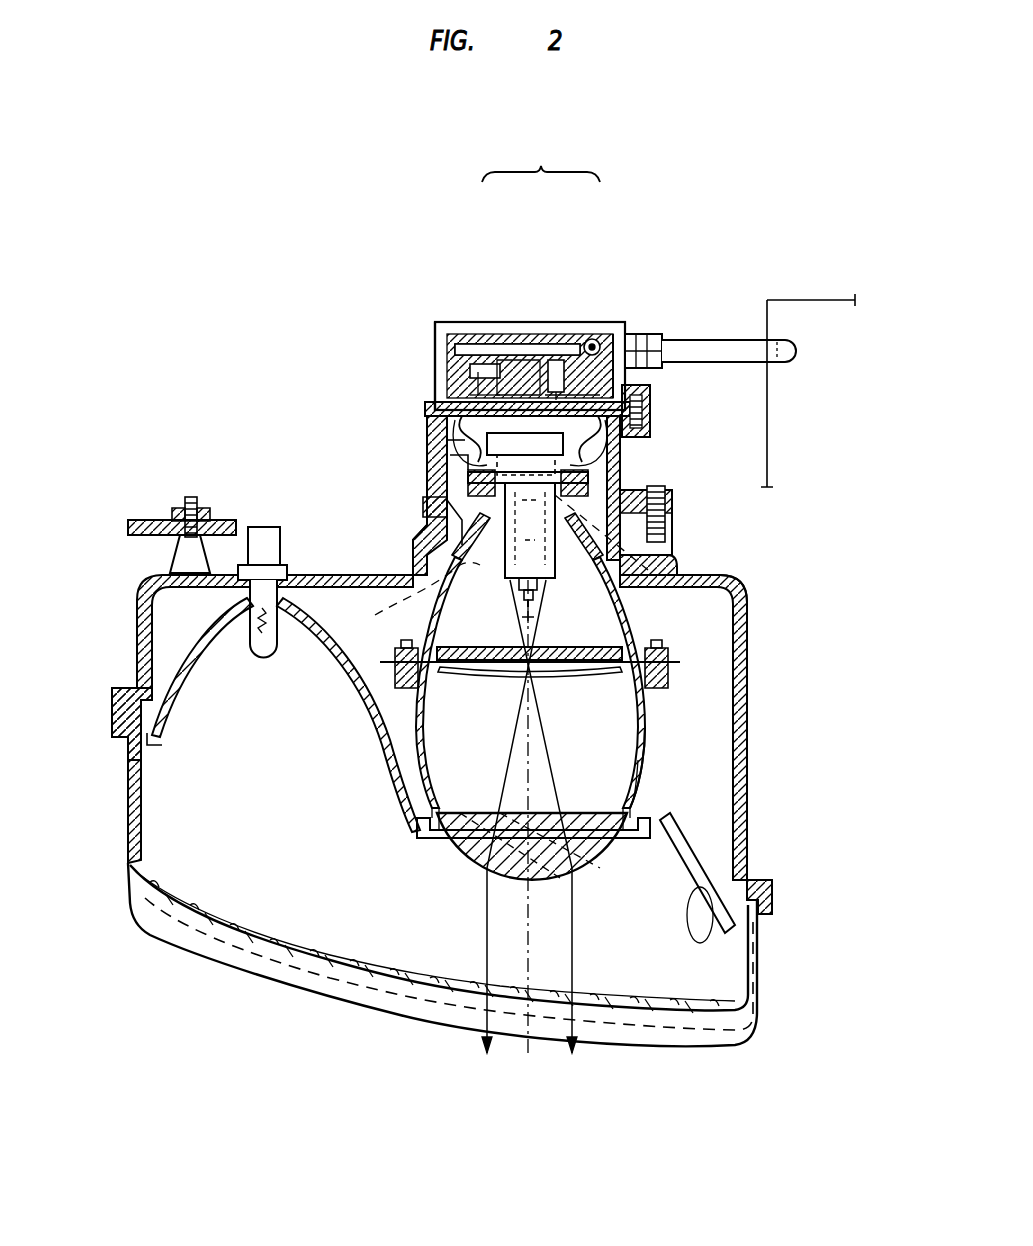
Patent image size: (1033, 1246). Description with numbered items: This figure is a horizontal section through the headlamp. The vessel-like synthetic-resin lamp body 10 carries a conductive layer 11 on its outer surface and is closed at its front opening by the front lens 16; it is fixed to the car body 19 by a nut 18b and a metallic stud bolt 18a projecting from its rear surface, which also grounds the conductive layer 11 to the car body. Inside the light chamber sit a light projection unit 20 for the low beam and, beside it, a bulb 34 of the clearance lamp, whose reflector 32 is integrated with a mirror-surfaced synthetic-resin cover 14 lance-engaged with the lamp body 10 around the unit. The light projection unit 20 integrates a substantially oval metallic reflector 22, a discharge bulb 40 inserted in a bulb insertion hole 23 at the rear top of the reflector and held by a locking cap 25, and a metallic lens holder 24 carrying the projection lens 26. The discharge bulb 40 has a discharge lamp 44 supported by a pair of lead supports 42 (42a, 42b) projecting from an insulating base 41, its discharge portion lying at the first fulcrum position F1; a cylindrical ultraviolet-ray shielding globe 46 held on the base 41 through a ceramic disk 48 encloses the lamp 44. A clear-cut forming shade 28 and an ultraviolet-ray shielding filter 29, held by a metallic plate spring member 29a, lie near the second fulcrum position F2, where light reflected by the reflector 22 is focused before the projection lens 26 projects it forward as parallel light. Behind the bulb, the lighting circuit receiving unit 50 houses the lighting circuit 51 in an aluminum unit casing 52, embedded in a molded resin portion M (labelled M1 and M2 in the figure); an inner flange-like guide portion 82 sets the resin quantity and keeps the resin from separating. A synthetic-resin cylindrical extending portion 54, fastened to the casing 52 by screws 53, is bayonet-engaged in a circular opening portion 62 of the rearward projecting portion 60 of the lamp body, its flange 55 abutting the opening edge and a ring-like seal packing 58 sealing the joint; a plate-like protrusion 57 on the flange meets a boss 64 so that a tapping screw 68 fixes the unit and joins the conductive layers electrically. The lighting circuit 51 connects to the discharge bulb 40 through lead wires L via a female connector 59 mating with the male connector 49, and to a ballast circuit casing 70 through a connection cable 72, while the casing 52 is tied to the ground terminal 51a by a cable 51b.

The lamp body 10 is at (747, 657).
The conductive layer 11 is at (747, 722).
The cover 14 is at (720, 942).
The front lens 16 is at (286, 996).
The stud bolt 18a is at (190, 497).
The nut 18b is at (178, 510).
The car body 19 is at (135, 532).
The light projection unit 20 is at (652, 750).
The reflector 22 is at (740, 597).
The bulb insertion hole 23 is at (425, 534).
The lens holder 24 is at (640, 792).
The locking cap 25 is at (447, 490).
The projection lens 26 is at (610, 857).
The clear-cut forming shade 28 is at (488, 669).
The ultraviolet-ray shielding filter 29 is at (380, 707).
The plate spring member 29a is at (622, 672).
The reflector of clearance lamp 32 is at (150, 642).
The bulb for clearance lamp 34 is at (258, 659).
The discharge bulb 40 is at (420, 627).
The insulating base 41 is at (468, 476).
The lead supports 42 is at (551, 562).
The lead support 42a is at (535, 602).
The lead support 42b is at (640, 567).
The discharge lamp 44 is at (408, 592).
The ultraviolet-ray shielding globe 46 is at (625, 562).
The ceramic disk 48 is at (447, 457).
The male connector 49 is at (520, 432).
The lighting circuit receiving unit 50 is at (445, 318).
The lighting circuit 51 is at (445, 347).
The ground terminal 51a is at (620, 336).
The cable 51b is at (655, 350).
The unit casing 52 is at (598, 342).
The screws 53 is at (648, 420).
The cylindrical extending portion 54 is at (600, 457).
The flange 55 is at (430, 506).
The plate-like protrusion 57 is at (665, 497).
The seal packing 58 is at (350, 494).
The female connector 59 is at (470, 344).
The rearward projecting portion 60 is at (415, 564).
The circular opening portion 62 is at (670, 542).
The boss 64 is at (672, 507).
The tapping screw 68 is at (770, 454).
The casing 70 is at (800, 300).
The connection cable 72 is at (732, 340).
The guide portion 82 is at (578, 345).
The first fulcrum position F1 is at (506, 625).
The second fulcrum position F2 is at (540, 674).
The lead wires L is at (465, 395).
The molded resin portion M is at (541, 160).
The first motor M1 is at (510, 440).
The second motor M2 is at (548, 440).